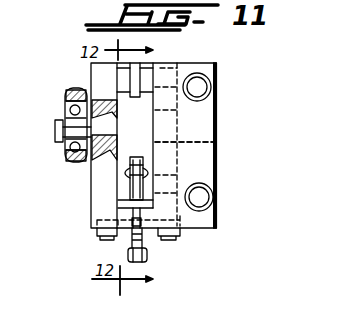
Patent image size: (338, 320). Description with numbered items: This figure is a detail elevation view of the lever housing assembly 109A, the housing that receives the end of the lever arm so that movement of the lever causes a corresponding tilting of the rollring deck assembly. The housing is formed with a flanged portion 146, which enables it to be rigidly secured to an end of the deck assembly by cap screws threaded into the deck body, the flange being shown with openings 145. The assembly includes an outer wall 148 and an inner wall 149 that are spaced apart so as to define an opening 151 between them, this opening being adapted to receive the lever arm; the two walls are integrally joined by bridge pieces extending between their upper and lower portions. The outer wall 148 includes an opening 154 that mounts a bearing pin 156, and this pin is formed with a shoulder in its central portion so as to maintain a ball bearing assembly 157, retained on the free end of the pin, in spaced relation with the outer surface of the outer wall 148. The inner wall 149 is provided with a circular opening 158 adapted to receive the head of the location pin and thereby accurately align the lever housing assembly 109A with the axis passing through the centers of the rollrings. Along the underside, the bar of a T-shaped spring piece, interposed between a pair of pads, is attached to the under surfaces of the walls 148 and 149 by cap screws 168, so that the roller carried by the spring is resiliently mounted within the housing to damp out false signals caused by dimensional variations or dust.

The lever housing assembly 109A is at (222, 154).
The mounting holes 145 is at (200, 84).
The flanged portion 146 is at (210, 128).
The outer wall 148 is at (95, 188).
The inner wall 149 is at (170, 68).
The opening 151 is at (120, 100).
The opening 154 is at (112, 110).
The bearing pin 156 is at (90, 160).
The ball bearing assembly 157 is at (66, 95).
The circular opening 158 is at (216, 143).
The cap screws 168 is at (108, 233).